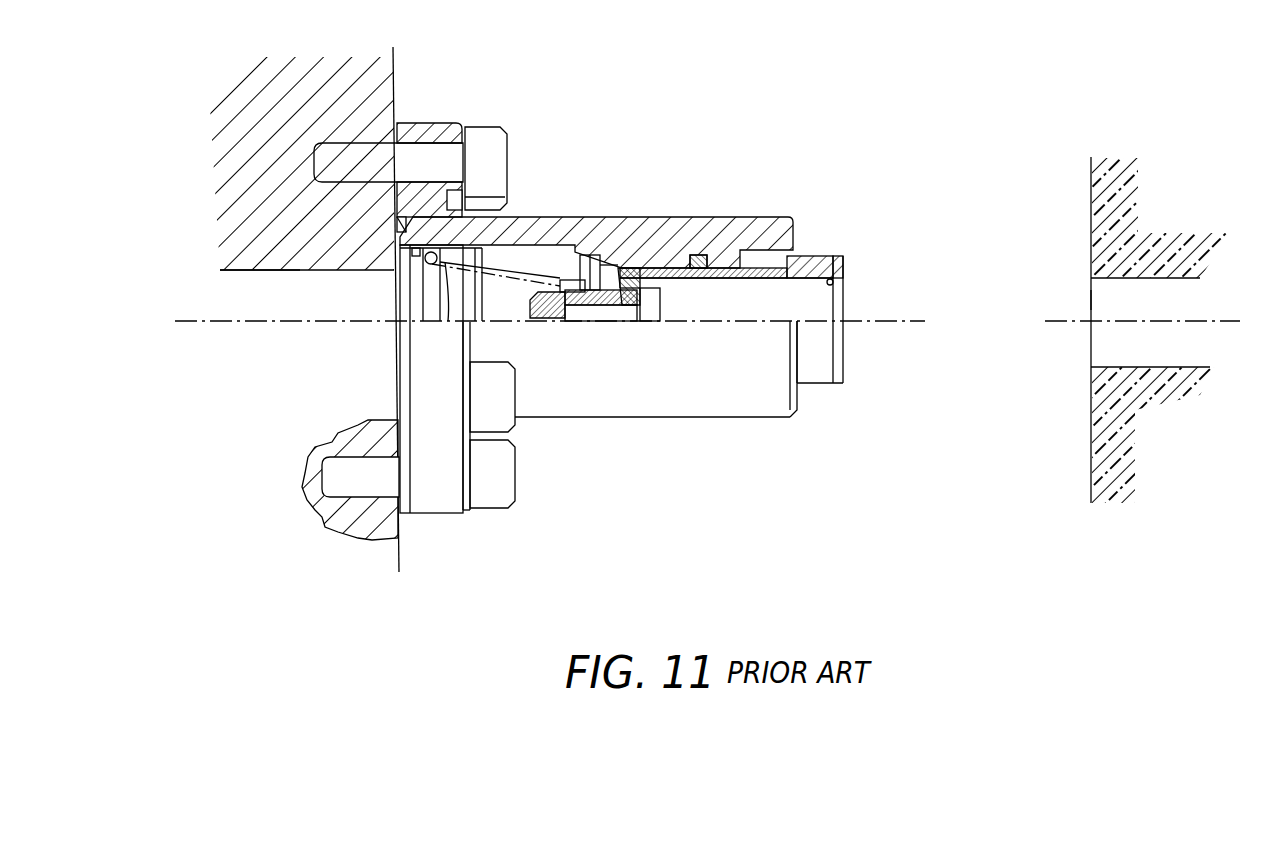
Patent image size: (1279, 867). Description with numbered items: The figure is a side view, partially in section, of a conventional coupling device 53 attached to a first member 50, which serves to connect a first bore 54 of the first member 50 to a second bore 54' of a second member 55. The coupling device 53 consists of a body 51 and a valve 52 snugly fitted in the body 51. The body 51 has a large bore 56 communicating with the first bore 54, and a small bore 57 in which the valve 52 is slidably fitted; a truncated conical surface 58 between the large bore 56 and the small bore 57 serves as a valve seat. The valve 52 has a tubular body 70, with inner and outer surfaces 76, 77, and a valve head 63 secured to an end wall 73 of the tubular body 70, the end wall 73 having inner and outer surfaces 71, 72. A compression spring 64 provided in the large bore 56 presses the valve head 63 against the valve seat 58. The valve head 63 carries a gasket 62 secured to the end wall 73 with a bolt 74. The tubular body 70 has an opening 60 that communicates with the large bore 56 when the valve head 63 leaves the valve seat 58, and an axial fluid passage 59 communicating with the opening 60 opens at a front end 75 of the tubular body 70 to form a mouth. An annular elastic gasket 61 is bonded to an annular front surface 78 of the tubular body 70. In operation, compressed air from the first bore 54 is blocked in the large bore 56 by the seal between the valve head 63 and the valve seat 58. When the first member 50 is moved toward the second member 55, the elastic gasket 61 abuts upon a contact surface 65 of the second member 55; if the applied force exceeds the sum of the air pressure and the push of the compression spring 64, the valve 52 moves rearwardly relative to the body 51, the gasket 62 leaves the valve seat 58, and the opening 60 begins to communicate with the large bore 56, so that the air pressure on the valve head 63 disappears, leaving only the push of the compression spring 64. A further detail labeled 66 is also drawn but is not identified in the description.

The first member 50 is at (383, 80).
The body 51 is at (765, 215).
The valve 52 is at (823, 253).
The coupling device 53 is at (603, 200).
The first bore 54 is at (226, 260).
The second bore 54' is at (1051, 274).
The second member 55 is at (1092, 188).
The large bore 56 is at (537, 244).
The small bore 57 is at (692, 252).
The truncated conical surface 58 is at (612, 250).
The axial fluid passage 59 is at (798, 299).
The opening 60 is at (655, 292).
The annular elastic gasket 61 is at (843, 262).
The gasket 62 is at (612, 306).
The valve head 63 is at (585, 308).
The compression spring 64 is at (430, 262).
The contact surface 65 is at (1092, 385).
The groove 66 is at (618, 270).
The tubular body 70 is at (815, 358).
The inner surface of end wall 71 is at (683, 278).
The outer surface of end wall 72 is at (640, 305).
The end wall 73 is at (625, 295).
The bolt 74 is at (590, 322).
The front end 75 is at (845, 340).
The inner surface of tubular body 76 is at (785, 242).
The outer surface of tubular body 77 is at (840, 253).
The annular front surface 78 is at (843, 287).